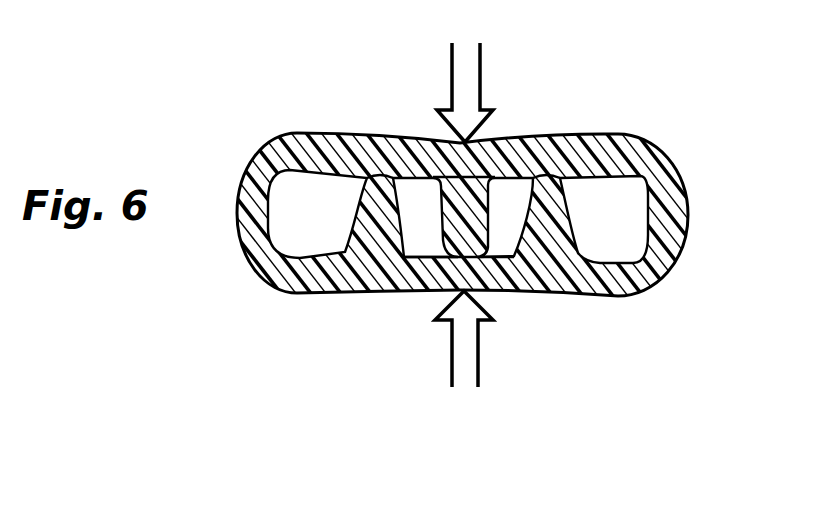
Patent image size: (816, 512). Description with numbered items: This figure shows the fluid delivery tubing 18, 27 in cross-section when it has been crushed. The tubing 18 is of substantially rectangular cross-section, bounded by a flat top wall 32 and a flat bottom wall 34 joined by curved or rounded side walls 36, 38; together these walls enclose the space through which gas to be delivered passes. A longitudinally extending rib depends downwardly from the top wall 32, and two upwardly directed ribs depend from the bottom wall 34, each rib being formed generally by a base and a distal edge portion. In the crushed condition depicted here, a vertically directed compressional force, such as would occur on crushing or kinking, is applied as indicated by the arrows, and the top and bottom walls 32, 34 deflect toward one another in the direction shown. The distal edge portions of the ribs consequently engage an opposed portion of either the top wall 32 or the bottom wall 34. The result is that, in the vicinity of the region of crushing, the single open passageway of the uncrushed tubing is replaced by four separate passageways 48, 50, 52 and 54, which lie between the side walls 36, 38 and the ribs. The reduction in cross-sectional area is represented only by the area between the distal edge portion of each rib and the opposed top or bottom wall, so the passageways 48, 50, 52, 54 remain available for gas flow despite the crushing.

The fluid delivery tubing 18 is at (256, 144).
The fluid delivery tubing 27 is at (460, 215).
The top wall 32 is at (420, 157).
The bottom wall 34 is at (595, 280).
The side wall 36 is at (247, 223).
The side wall 38 is at (673, 208).
The passageway 48 is at (303, 235).
The passageway 50 is at (423, 208).
The passageway 52 is at (505, 233).
The passageway 54 is at (623, 223).